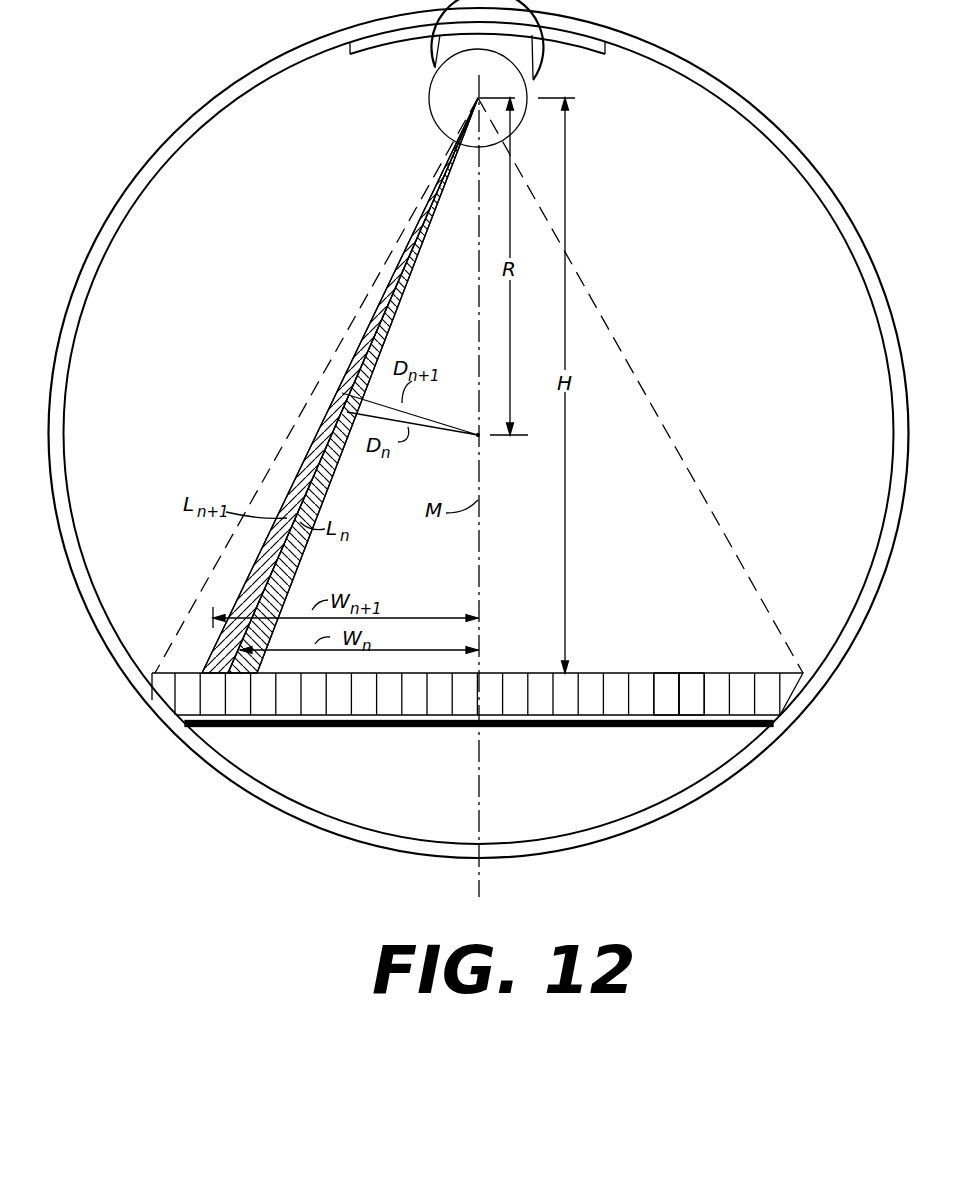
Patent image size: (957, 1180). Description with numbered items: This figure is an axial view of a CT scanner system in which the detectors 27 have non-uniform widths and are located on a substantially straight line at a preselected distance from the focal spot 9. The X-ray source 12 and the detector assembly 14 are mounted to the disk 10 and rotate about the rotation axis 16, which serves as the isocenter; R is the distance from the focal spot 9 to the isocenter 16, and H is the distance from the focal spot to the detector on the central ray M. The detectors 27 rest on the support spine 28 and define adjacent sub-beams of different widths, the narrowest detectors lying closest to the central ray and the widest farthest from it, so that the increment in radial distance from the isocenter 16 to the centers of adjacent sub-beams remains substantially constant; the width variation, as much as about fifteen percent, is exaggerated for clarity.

The focal spot 9 is at (473, 96).
The disk 10 is at (742, 96).
The source 12 is at (532, 108).
The detector assembly 14 is at (707, 660).
The rotation axis 16 is at (474, 440).
The detectors 27 is at (692, 683).
The support spine 28 is at (616, 724).